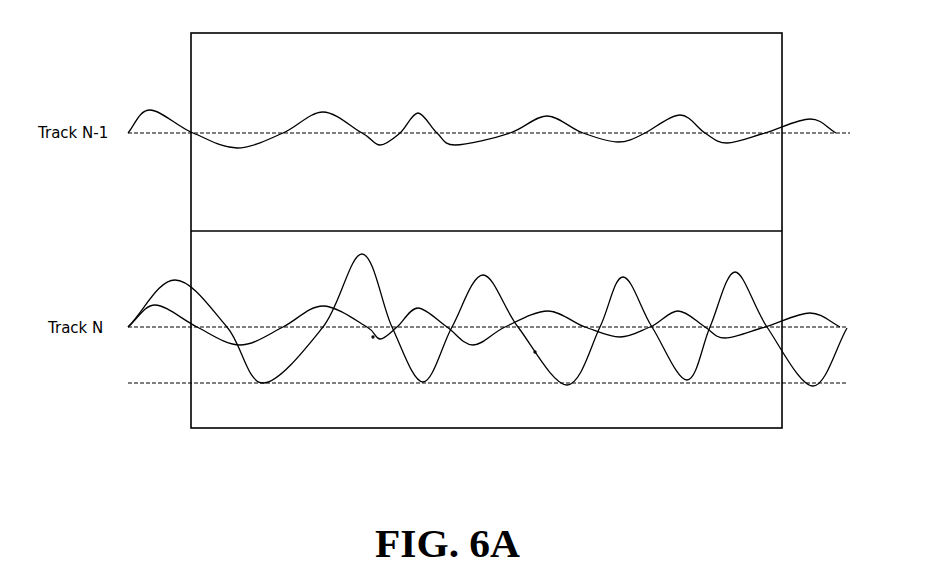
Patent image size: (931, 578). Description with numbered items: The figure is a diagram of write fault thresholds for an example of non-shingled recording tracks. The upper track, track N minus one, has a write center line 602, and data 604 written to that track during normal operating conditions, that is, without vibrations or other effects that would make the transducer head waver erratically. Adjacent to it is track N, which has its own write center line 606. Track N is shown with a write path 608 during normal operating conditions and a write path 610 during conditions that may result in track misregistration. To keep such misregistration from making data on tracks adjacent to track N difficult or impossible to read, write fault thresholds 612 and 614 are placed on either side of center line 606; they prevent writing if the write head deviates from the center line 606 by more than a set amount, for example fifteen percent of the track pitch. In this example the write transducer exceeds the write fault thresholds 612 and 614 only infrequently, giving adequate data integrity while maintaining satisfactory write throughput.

The write center line 602 is at (160, 134).
The data 604 is at (147, 110).
The write center line 606 is at (160, 330).
The write path 608 is at (373, 337).
The write path 610 is at (535, 352).
The write fault threshold 612 is at (143, 272).
The write fault threshold 614 is at (160, 385).